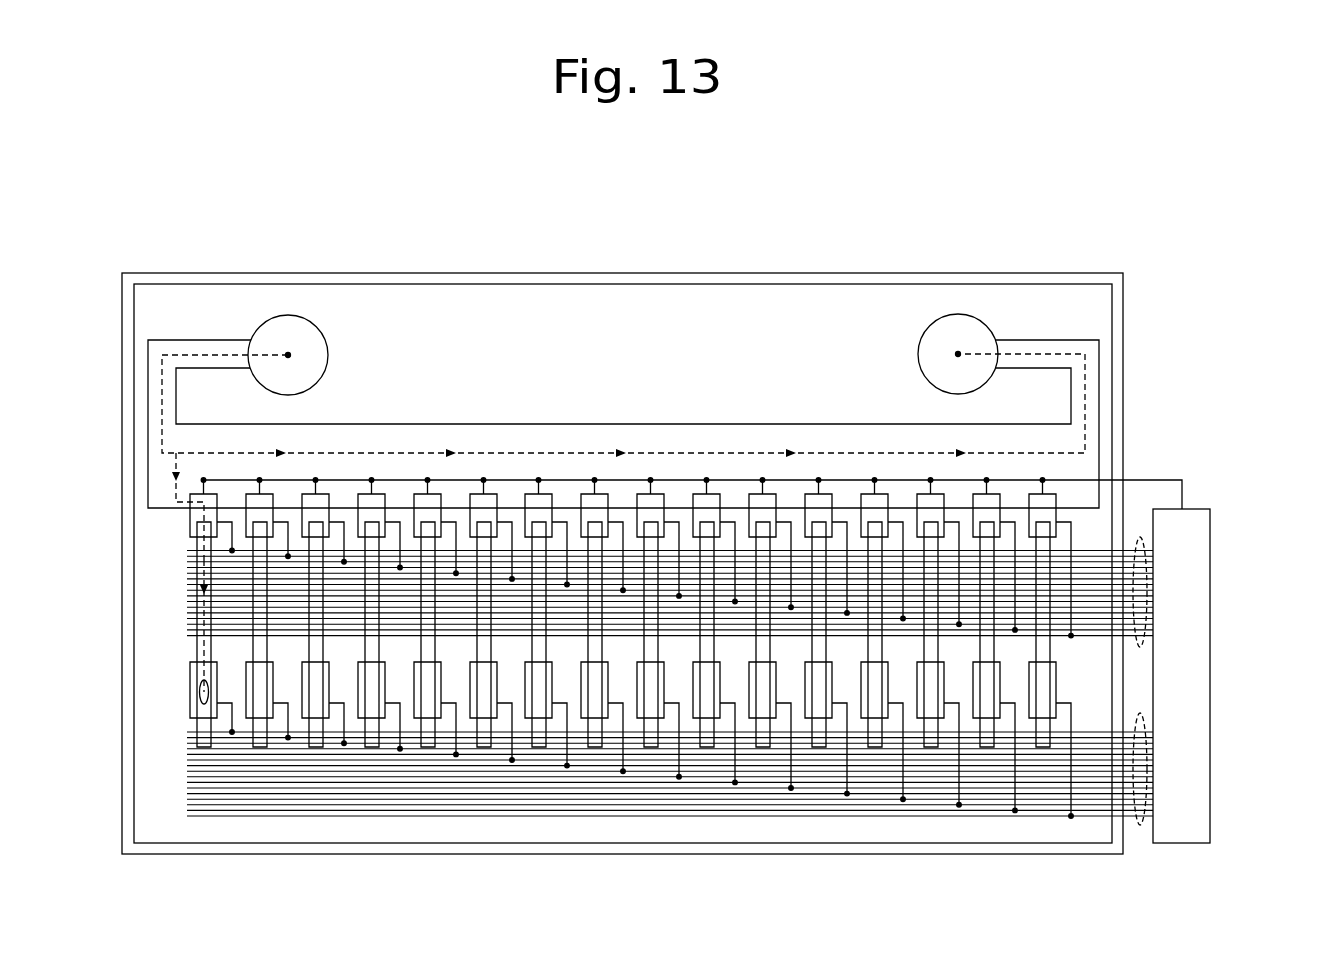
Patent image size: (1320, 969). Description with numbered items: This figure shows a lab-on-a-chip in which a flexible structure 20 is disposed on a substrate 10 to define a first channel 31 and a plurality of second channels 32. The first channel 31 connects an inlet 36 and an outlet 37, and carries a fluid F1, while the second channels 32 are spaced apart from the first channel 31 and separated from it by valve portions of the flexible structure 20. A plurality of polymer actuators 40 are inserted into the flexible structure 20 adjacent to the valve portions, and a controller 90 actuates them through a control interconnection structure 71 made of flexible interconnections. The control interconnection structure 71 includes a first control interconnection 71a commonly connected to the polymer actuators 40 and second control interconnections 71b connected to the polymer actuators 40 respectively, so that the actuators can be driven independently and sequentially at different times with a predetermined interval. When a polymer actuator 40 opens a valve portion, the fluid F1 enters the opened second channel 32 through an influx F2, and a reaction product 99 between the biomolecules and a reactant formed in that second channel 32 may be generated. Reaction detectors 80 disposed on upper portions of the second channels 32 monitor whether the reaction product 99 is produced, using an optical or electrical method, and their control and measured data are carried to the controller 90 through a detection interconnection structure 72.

The substrate 10 is at (123, 786).
The flexible structure 20 is at (145, 746).
The first channel 31 is at (148, 462).
The second channels 32 is at (198, 652).
The inlet 36 is at (288, 322).
The outlet 37 is at (957, 322).
The polymer actuators 40 is at (190, 519).
The control interconnection structure 71 is at (725, 508).
The first control interconnection 71a is at (1180, 479).
The second control interconnections 71b is at (1140, 537).
The detection interconnection structure 72 is at (1143, 715).
The reaction detectors 80 is at (190, 706).
The controller 90 is at (1198, 654).
The reaction product 99 is at (198, 690).
The fluid F1 is at (552, 452).
The influx F2 is at (176, 488).